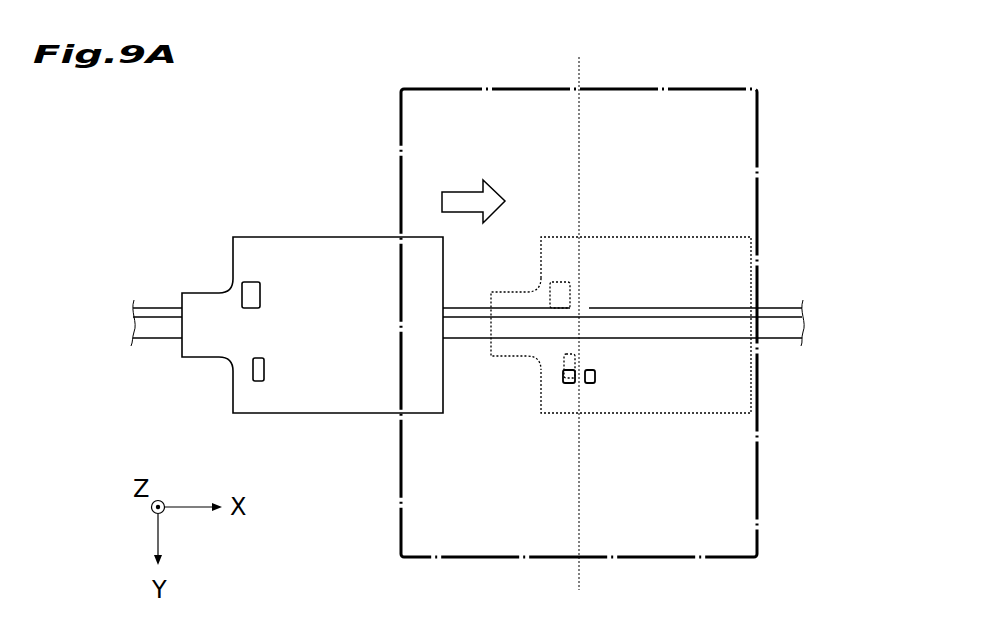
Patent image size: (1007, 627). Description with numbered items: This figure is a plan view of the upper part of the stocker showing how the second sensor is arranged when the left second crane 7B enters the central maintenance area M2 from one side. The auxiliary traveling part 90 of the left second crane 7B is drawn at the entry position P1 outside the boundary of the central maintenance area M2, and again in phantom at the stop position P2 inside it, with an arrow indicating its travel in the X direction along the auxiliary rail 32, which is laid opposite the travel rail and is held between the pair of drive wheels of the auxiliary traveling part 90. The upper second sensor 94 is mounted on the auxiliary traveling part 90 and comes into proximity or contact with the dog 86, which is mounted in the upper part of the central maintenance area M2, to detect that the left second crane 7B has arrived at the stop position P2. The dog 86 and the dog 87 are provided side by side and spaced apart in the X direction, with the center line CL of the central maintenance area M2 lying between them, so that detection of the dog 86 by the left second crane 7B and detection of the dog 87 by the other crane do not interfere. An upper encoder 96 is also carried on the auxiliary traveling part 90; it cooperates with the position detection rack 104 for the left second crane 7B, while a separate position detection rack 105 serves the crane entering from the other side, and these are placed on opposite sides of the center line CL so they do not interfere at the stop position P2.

The left second crane 7B is at (335, 237).
The auxiliary traveling part 90 is at (354, 424).
The upper encoder 96 is at (252, 282).
The upper second sensor 94 is at (258, 381).
The position detection rack 104 is at (158, 307).
The position detection rack 105 is at (779, 310).
The auxiliary rail 32 is at (707, 327).
The dog 86 is at (568, 384).
The dog 87 is at (590, 384).
The entry position P1 is at (251, 333).
The stop position P2 is at (628, 320).
The central maintenance area M2 is at (767, 110).
The center line CL is at (579, 72).